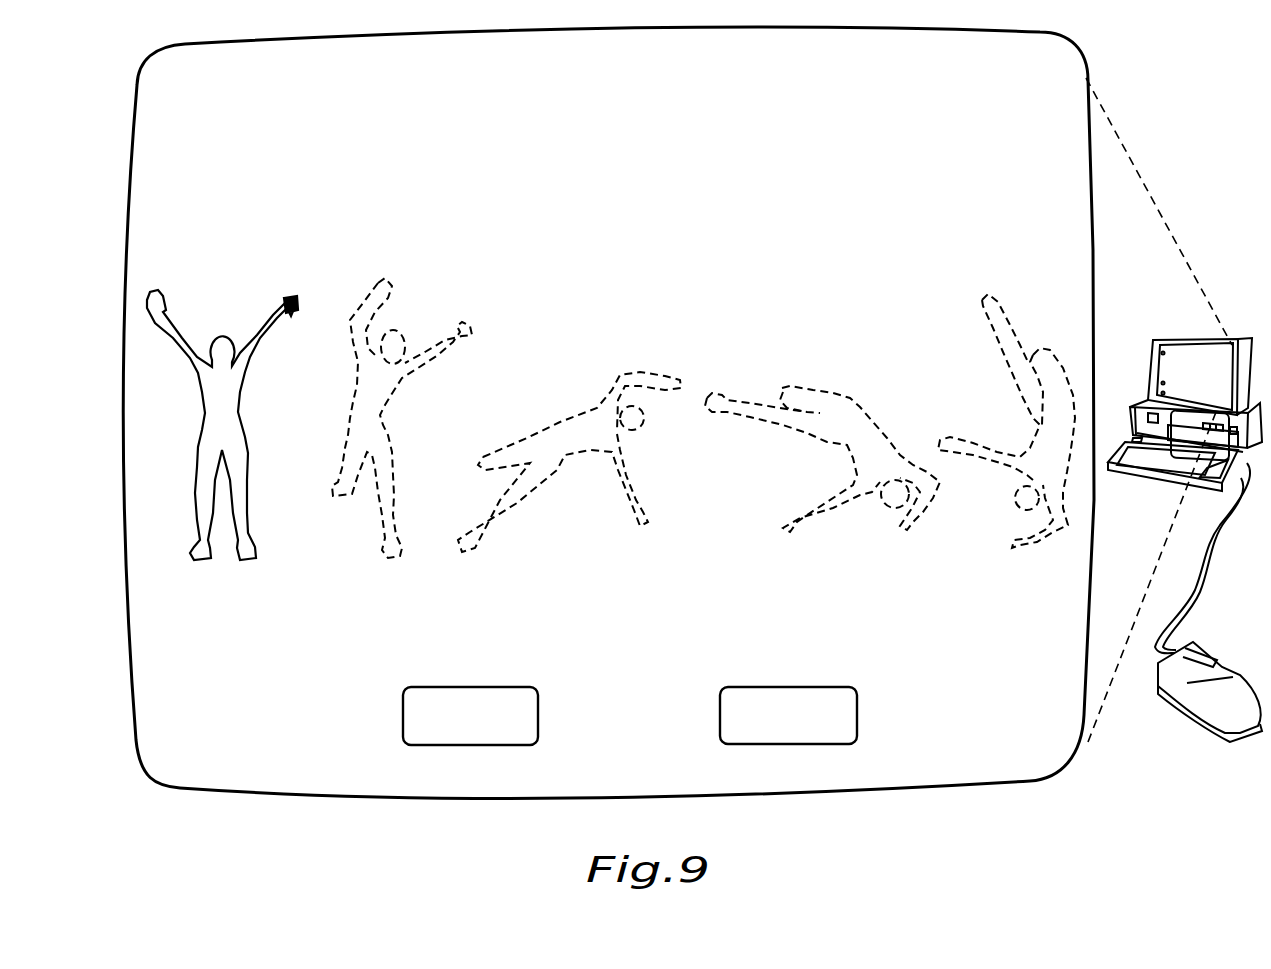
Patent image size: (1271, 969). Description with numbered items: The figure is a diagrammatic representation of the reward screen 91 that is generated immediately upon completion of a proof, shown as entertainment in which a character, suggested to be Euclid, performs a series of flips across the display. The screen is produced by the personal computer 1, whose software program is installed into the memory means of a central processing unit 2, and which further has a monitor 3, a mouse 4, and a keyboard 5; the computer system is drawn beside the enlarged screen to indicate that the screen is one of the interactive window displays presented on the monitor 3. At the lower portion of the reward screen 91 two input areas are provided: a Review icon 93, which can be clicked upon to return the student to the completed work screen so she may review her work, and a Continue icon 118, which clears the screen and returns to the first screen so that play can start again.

The personal computer 1 is at (1215, 296).
The central processing unit 2 is at (1130, 406).
The monitor 3 is at (1235, 345).
The mouse 4 is at (1222, 660).
The keyboard 5 is at (1173, 460).
The reward screen 91 is at (1010, 783).
The Review icon 93 is at (403, 694).
The Continue icon 118 is at (833, 687).